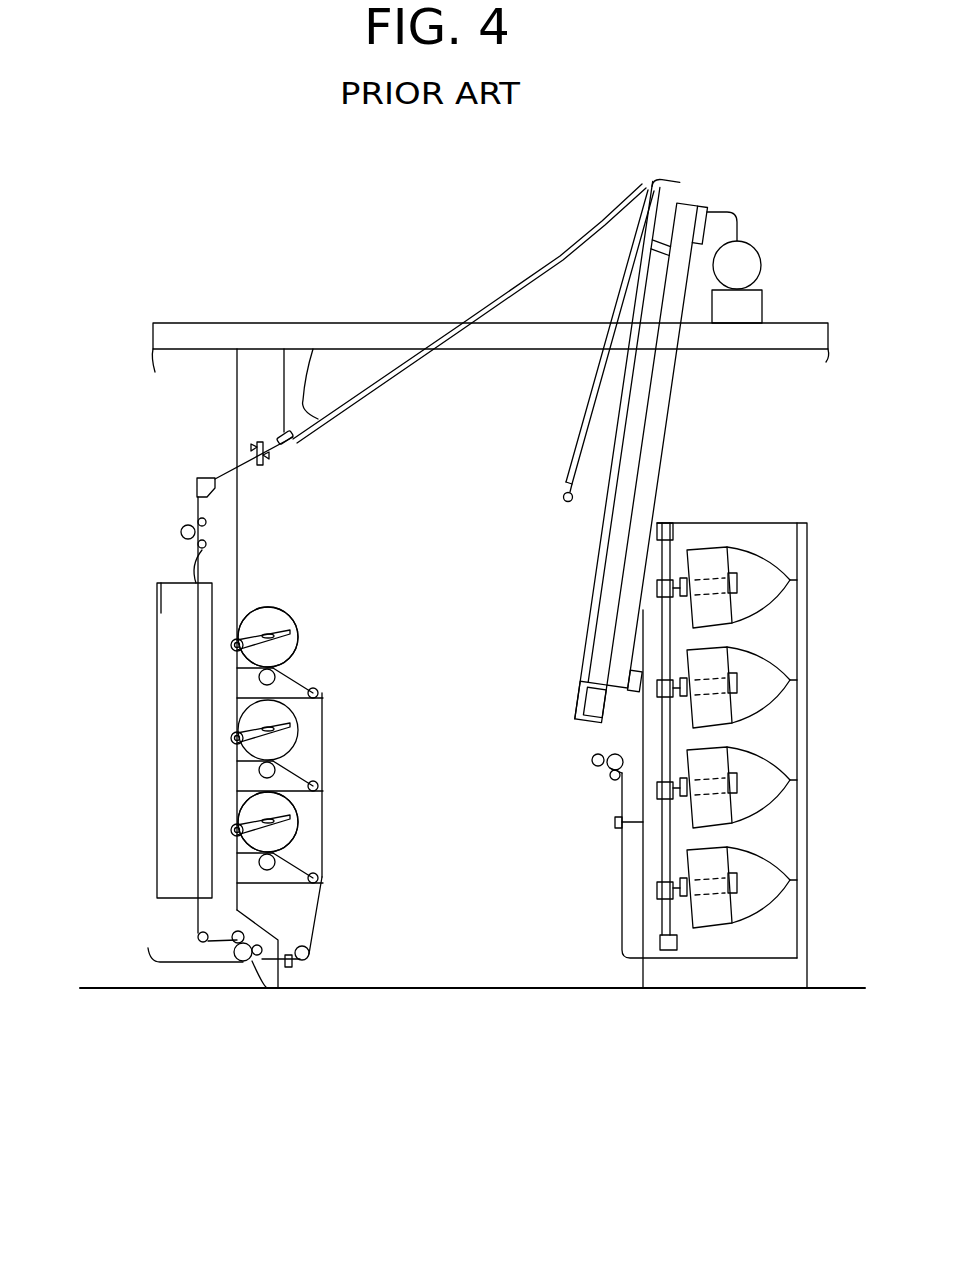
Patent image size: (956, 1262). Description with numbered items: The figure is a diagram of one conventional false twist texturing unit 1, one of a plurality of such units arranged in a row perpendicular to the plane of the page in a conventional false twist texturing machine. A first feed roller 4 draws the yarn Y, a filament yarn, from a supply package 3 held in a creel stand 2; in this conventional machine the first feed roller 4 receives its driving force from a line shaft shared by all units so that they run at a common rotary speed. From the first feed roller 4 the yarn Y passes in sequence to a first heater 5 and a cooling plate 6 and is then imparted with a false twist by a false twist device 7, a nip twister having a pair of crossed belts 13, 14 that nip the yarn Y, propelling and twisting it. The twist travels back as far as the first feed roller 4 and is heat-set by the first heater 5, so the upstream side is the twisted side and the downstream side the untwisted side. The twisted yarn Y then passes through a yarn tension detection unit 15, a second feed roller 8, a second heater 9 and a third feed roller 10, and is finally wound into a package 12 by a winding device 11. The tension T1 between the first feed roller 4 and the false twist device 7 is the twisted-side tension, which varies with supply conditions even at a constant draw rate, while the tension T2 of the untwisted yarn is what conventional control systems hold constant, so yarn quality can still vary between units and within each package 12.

The false twist texturing unit 1 is at (286, 288).
The creel stand 2 is at (797, 523).
The supply package 3 is at (717, 562).
The first feed roller 4 is at (600, 768).
The first heater 5 is at (602, 558).
The cooling plate 6 is at (514, 288).
The false twist device 7 is at (292, 474).
The second feed roller 8 is at (181, 532).
The second heater 9 is at (157, 752).
The third feed roller 10 is at (250, 963).
The winding device 11 is at (315, 650).
The package 12 is at (285, 613).
The crossed belt 13 is at (250, 448).
The crossed belt 14 is at (280, 433).
The yarn tension detection unit 15 is at (197, 481).
The tension of the yarn between the first feed roller and the false twist device T1 is at (643, 468).
The tension of the untwisted yarn T2 is at (233, 484).
The yarn Y is at (226, 474).